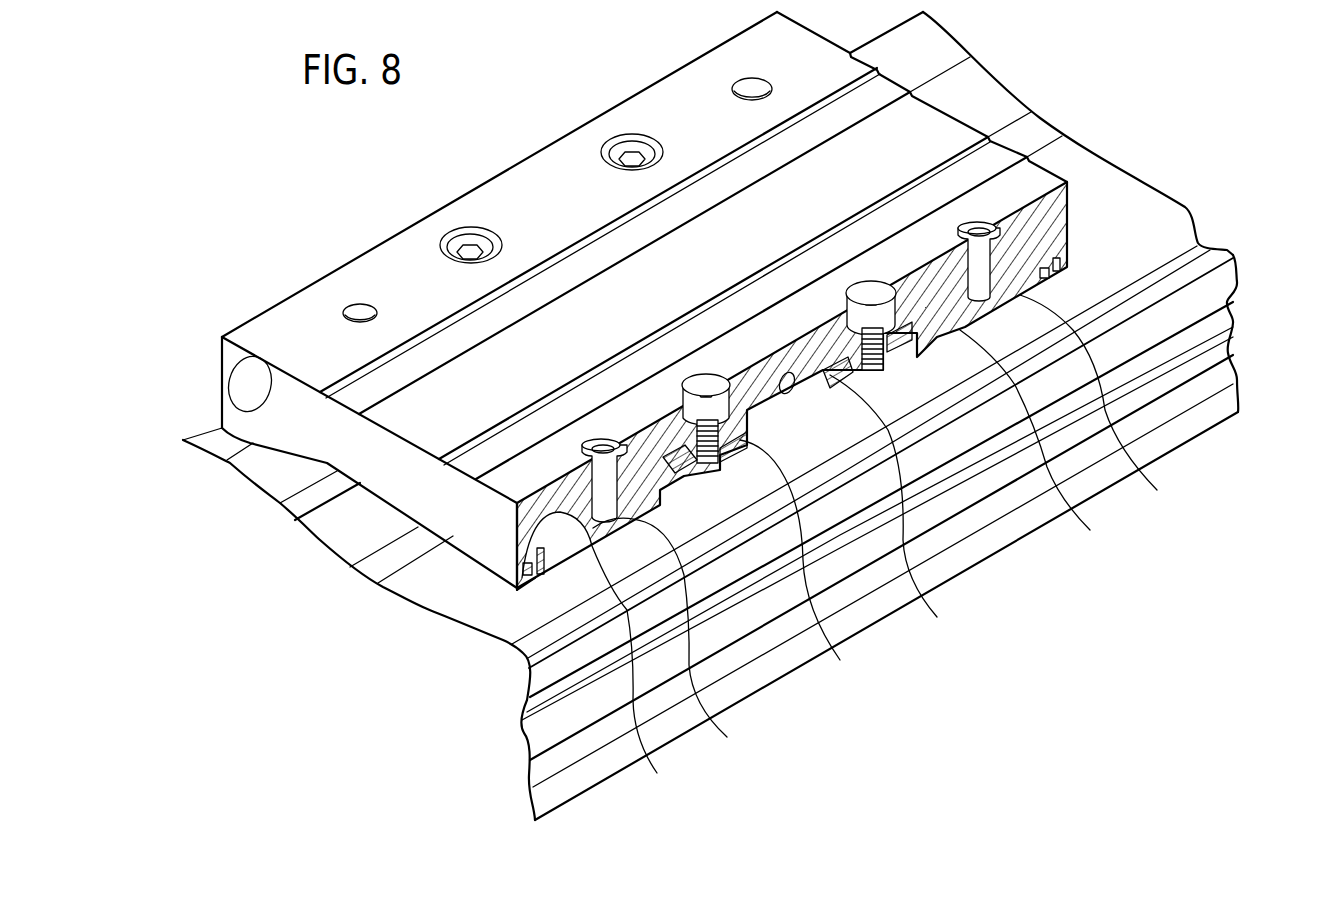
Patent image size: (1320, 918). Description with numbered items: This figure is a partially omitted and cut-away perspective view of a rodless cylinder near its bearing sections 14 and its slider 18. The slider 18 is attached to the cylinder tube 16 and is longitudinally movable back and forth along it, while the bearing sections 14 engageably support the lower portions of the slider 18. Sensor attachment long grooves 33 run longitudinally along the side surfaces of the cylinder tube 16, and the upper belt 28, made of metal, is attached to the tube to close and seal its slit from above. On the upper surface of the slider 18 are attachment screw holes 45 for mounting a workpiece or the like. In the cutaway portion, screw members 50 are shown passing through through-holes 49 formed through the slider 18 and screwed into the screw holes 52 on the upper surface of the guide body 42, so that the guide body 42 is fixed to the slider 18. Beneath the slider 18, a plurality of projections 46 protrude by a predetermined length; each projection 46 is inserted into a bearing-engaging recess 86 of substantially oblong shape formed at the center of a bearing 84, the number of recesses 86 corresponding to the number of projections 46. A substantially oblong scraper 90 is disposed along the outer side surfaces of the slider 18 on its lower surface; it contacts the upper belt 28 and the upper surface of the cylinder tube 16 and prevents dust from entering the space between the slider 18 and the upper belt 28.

The bearing section 14 is at (565, 573).
The cylinder tube 16 is at (1183, 428).
The slider 18 is at (867, 97).
The upper belt 28 is at (325, 532).
The sensor attachment long groove 33 is at (1222, 318).
The guide body 42 is at (845, 537).
The attachment screw hole 45 is at (747, 78).
The projection 46 is at (1065, 268).
The through-hole 49 is at (630, 145).
The screw member 50 is at (614, 150).
The screw hole 52 is at (867, 367).
The bearing 84 is at (1168, 505).
The bearing-engaging recess 86 is at (850, 548).
The scraper 90 is at (1067, 272).